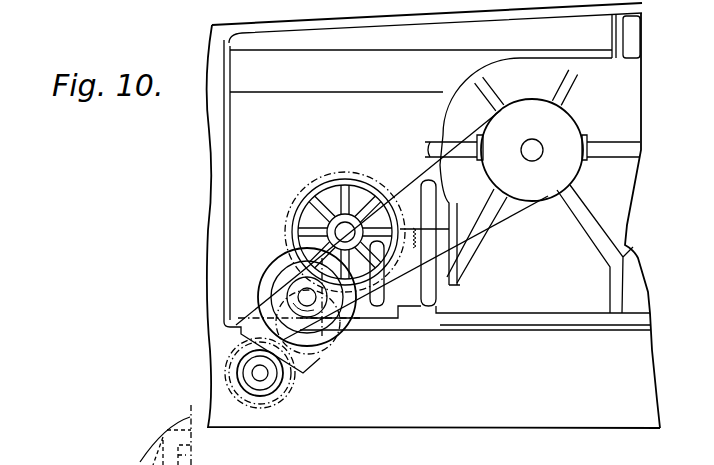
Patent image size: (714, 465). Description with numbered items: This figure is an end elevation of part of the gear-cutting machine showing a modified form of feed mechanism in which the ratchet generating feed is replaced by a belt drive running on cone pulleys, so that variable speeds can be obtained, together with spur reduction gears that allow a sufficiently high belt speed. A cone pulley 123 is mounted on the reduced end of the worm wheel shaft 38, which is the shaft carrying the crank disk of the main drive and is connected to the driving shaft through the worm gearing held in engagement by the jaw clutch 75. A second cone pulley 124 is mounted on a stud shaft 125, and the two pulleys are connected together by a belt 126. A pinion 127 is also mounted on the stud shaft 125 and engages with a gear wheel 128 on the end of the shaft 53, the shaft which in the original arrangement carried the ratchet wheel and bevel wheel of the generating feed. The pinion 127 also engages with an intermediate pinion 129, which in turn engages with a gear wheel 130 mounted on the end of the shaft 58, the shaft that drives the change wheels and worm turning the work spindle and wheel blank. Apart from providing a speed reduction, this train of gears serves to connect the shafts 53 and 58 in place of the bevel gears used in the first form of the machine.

The worm wheel shaft 38 is at (533, 139).
The shaft 53 is at (351, 214).
The shaft 58 is at (252, 375).
The jaw clutch 75 is at (412, 215).
The cone pulley 123 is at (574, 128).
The second cone pulley 124 is at (268, 262).
The stud shaft 125 is at (298, 298).
The belt 126 is at (418, 165).
The pinion 127 is at (286, 284).
The gear wheel 128 is at (289, 210).
The intermediate pinion 129 is at (262, 322).
The gear wheel 130 is at (283, 399).